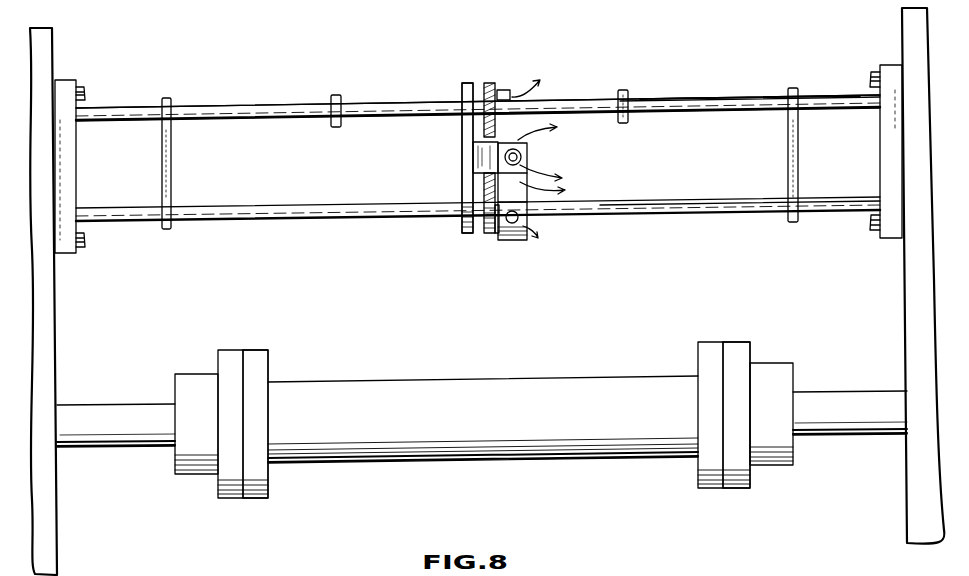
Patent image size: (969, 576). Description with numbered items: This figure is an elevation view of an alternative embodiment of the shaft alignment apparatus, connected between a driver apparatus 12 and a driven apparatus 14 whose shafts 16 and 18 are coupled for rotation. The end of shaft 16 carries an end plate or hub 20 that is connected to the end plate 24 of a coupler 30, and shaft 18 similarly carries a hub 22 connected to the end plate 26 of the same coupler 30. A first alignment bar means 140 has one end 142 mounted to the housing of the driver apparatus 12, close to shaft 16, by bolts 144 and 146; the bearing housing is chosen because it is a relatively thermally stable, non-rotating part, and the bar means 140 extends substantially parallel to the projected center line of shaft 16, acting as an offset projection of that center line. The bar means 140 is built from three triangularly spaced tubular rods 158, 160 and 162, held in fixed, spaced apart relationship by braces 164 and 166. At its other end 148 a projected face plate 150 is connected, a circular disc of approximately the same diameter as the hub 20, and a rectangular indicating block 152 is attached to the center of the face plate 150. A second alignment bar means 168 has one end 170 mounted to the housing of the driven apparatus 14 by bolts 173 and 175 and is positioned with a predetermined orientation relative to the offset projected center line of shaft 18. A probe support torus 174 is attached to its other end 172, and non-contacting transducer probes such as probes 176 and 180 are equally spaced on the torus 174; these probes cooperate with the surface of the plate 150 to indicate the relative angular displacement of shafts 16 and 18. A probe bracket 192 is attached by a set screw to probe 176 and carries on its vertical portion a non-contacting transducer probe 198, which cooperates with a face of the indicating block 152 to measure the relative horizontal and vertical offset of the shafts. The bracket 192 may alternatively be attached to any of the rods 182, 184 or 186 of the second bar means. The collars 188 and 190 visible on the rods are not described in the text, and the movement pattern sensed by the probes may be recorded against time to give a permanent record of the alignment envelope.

The driver apparatus 12 is at (50, 334).
The driven apparatus 14 is at (908, 322).
The shaft 16 is at (139, 410).
The shaft 18 is at (839, 400).
The end plate or hub 20 is at (232, 362).
The hub 22 is at (735, 349).
The end plate 24 is at (255, 360).
The end plate 26 is at (708, 350).
The coupler 30 is at (458, 386).
The first alignment bar means 140 is at (201, 69).
The one end 142 is at (80, 66).
The bolt 144 is at (85, 101).
The bolt 146 is at (85, 248).
The other end 148 is at (467, 73).
The projected face plate 150 is at (468, 84).
The indicating block 152 is at (477, 153).
The tubular rod 158 is at (478, 101).
The tubular rod 160 is at (241, 106).
The tubular rod 162 is at (349, 219).
The brace 164 is at (338, 95).
The brace 166 is at (163, 99).
The second alignment bar means 168 is at (662, 69).
The one end 170 is at (872, 52).
The other end 172 is at (560, 77).
The bolt 173 is at (869, 79).
The probe support torus 174 is at (489, 83).
The bolt 175 is at (869, 228).
The probe 176 is at (504, 90).
The probe 180 is at (498, 238).
The rod 182 is at (750, 97).
The rod 184 is at (685, 97).
The rod 186 is at (711, 216).
The right stop collar 188 is at (622, 90).
The right collar 190 is at (790, 88).
The probe bracket 192 is at (540, 225).
The non-contacting transducer probe 198 is at (531, 155).